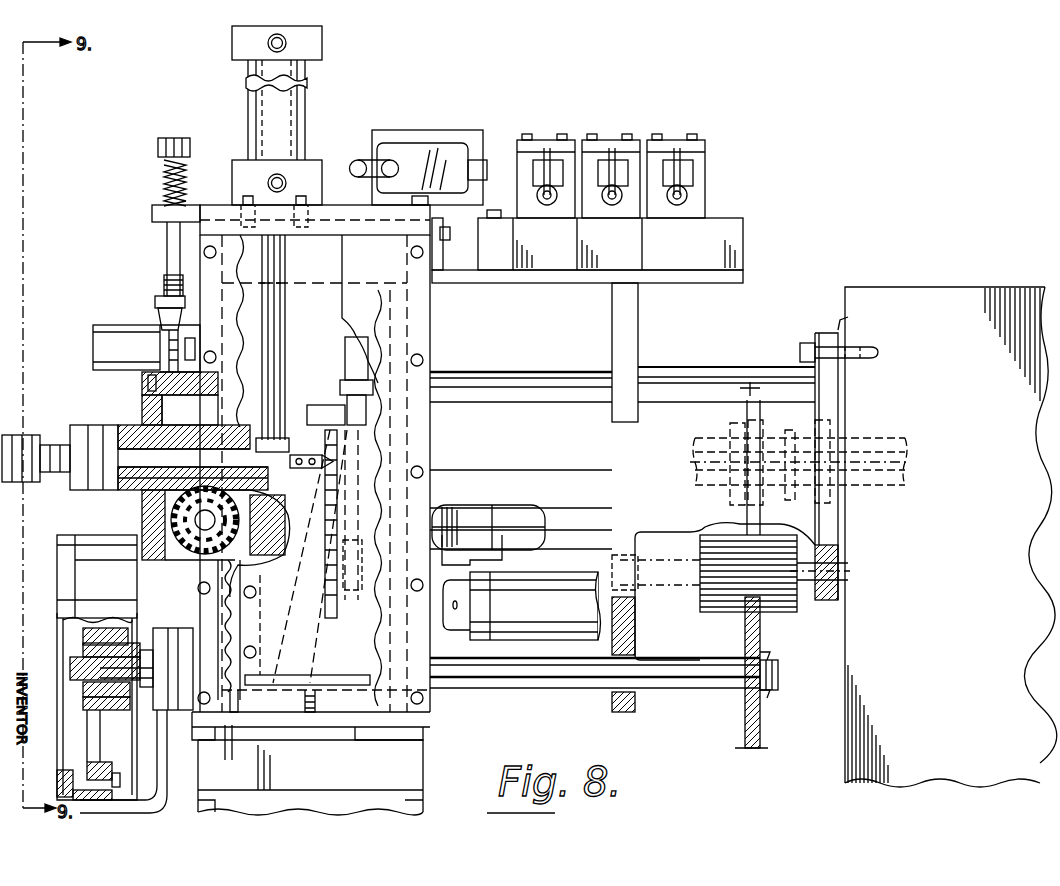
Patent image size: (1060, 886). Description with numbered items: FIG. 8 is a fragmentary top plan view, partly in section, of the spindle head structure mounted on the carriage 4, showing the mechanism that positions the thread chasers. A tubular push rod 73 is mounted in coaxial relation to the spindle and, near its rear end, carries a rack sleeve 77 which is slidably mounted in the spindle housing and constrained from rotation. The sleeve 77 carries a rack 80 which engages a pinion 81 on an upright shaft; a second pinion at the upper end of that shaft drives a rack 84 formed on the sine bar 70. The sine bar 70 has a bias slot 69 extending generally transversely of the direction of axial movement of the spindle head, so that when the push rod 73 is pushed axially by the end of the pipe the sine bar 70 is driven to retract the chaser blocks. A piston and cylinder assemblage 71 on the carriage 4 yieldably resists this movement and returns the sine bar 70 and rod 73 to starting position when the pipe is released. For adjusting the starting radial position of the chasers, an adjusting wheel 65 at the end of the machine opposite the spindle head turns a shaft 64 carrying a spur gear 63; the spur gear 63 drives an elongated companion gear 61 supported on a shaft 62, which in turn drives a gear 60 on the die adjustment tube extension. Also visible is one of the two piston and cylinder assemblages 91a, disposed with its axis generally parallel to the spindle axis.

The carriage 4 is at (951, 537).
The gear 60 is at (755, 368).
The elongated companion gear 61 is at (727, 612).
The shaft 62 is at (690, 594).
The spur gear 63 is at (760, 729).
The shaft 64 is at (720, 690).
The adjusting wheel 65 is at (68, 538).
The bias slot 69 is at (318, 622).
The sine bar 70 is at (298, 425).
The piston and cylinder assemblage 71 is at (305, 107).
The tubular push rod 73 is at (140, 482).
The rack sleeve 77 is at (135, 428).
The rack 80 is at (288, 500).
The pinion 81 is at (194, 540).
The rack 84 is at (228, 620).
The piston and cylinder assemblage 91a is at (516, 572).